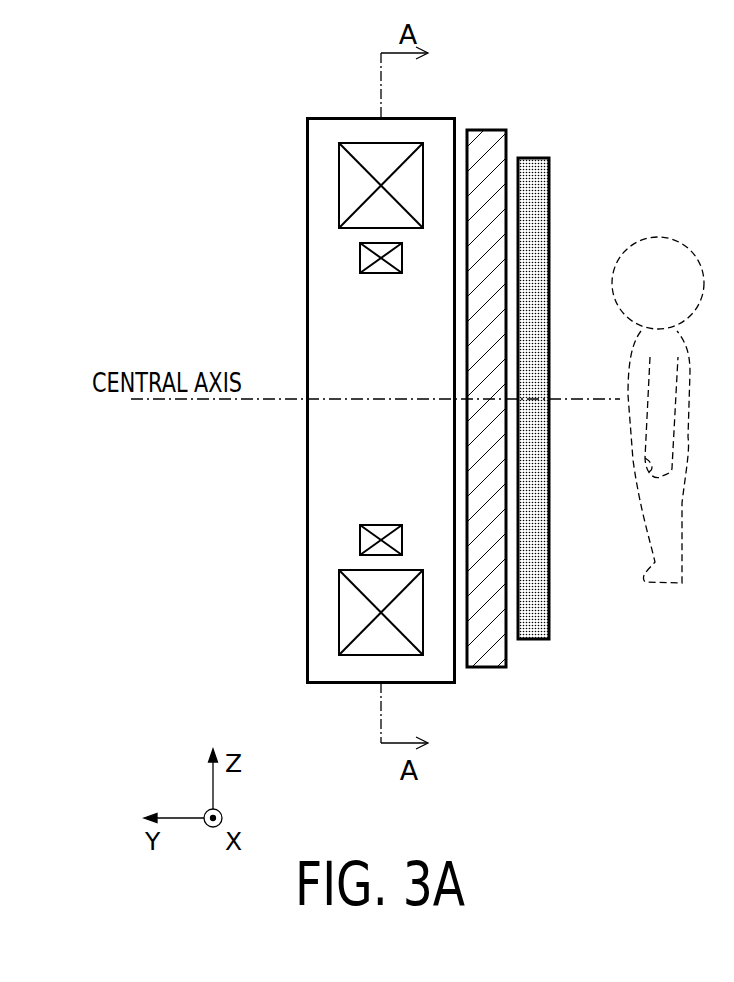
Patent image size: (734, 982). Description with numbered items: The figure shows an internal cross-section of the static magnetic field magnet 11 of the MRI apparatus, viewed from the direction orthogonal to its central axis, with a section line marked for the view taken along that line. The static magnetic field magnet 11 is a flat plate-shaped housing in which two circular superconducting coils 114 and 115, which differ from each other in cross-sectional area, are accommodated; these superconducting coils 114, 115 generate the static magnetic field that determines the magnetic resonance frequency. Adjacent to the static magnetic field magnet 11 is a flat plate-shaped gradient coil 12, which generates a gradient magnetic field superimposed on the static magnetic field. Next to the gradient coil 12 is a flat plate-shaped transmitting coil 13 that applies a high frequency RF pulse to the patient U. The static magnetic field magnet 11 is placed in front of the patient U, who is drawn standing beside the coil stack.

The static magnetic field magnet 11 is at (306, 323).
The superconducting coil 114 is at (339, 183).
The superconducting coil 115 is at (360, 253).
The gradient coil 12 is at (490, 130).
The transmitting coil 13 is at (532, 158).
The patient U is at (668, 237).